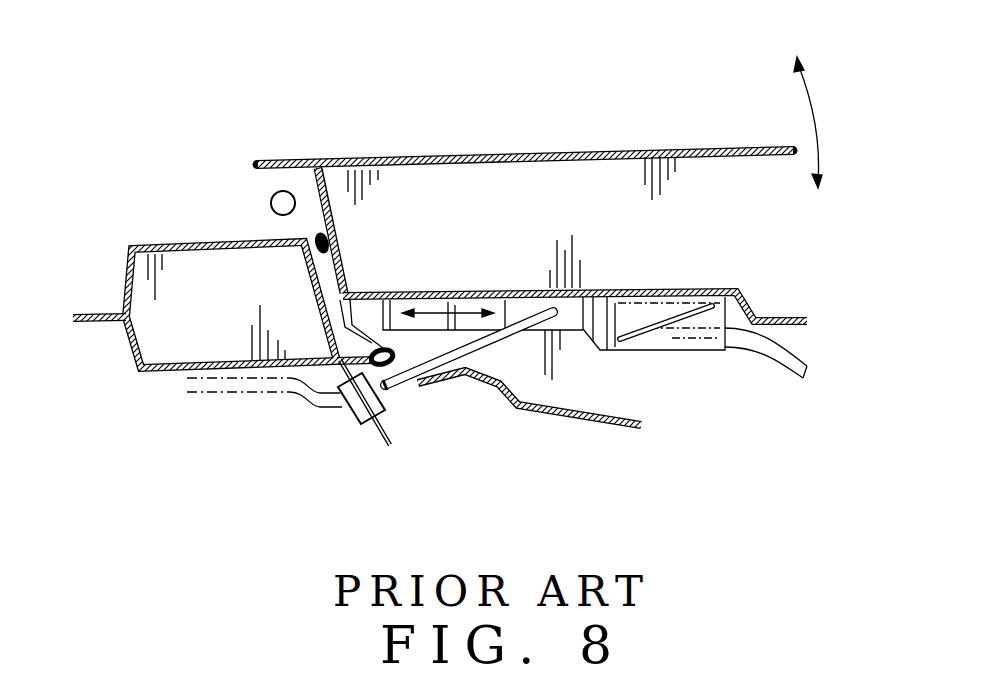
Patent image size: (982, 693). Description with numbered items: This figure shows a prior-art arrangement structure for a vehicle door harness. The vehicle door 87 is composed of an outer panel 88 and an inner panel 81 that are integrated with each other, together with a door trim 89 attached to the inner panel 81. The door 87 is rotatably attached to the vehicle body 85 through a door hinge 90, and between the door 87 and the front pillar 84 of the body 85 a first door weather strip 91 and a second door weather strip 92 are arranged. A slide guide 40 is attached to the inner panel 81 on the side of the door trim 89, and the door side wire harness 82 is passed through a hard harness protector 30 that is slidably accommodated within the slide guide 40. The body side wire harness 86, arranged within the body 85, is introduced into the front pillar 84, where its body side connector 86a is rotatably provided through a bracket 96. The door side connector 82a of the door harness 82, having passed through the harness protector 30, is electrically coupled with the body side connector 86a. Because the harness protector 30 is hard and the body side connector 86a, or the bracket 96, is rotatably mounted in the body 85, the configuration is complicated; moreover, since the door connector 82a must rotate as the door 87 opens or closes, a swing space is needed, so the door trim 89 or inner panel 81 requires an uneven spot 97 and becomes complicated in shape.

The harness protector 30 is at (508, 319).
The slide guide 40 is at (673, 352).
The inner panel 81 is at (647, 287).
The door side wire harness 82 is at (780, 354).
The door side connector 82a is at (391, 405).
The front pillar 84 is at (158, 244).
The vehicle body 85 is at (233, 425).
The body side wire harness 86 is at (255, 388).
The body side connector 86a is at (338, 403).
The vehicle door 87 is at (600, 144).
The outer panel 88 is at (495, 150).
The door trim 89 is at (611, 432).
The door hinge 90 is at (288, 193).
The first door weather strip 91 is at (331, 240).
The second door weather strip 92 is at (392, 330).
The bracket 96 is at (380, 428).
The uneven spot 97 is at (415, 385).